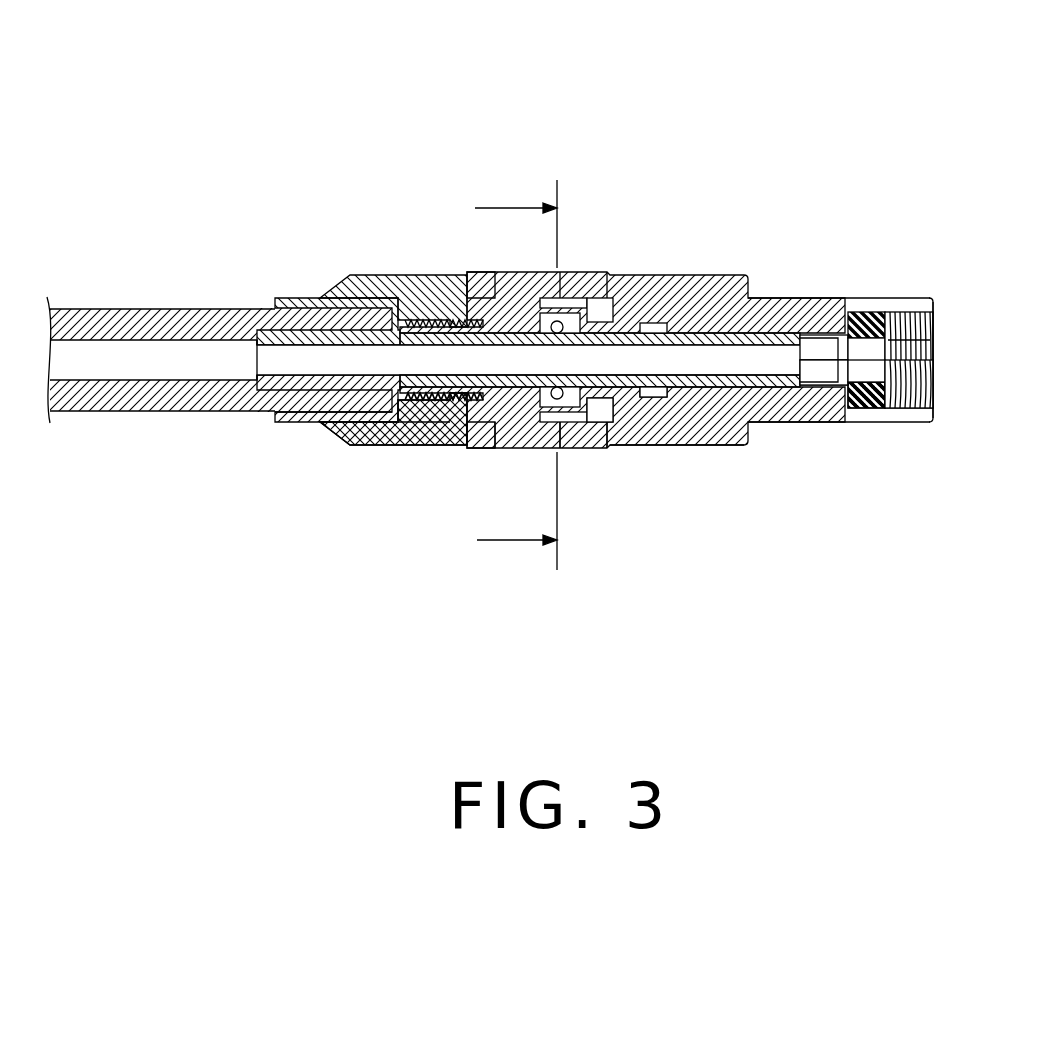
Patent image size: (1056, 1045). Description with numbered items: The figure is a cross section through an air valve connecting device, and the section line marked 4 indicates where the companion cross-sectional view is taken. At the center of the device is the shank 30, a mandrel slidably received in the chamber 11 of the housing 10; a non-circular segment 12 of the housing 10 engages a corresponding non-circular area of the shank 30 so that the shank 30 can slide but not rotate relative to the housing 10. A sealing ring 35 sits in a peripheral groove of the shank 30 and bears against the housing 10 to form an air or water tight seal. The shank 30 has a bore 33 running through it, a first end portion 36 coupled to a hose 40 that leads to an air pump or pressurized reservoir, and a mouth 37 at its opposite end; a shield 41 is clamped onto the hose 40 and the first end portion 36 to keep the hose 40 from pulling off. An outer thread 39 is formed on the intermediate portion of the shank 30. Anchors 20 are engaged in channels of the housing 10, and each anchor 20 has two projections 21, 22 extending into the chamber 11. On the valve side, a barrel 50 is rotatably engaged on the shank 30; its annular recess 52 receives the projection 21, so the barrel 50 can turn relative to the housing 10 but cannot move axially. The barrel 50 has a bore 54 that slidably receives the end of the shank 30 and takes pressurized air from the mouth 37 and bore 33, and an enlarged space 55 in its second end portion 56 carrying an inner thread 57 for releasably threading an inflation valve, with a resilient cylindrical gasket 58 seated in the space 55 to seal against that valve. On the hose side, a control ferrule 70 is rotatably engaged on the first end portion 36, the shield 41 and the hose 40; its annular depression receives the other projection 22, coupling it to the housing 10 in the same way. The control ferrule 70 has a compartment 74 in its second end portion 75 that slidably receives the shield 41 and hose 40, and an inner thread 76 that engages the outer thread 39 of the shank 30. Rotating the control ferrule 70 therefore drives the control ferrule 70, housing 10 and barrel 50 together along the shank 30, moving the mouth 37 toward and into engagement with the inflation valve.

The section line 4- 4 is at (505, 366).
The housing 10 is at (635, 443).
The chamber 11 is at (652, 412).
The non-circular segment 12 is at (573, 303).
The anchor 20 is at (572, 398).
The projection 21 is at (597, 420).
The projection 22 is at (508, 447).
The shank 30 is at (740, 277).
The bore 33 is at (723, 358).
The sealing ring 35 is at (533, 453).
The first end portion 36 is at (263, 420).
The mouth 37 is at (827, 305).
The outer thread 39 is at (440, 438).
The hose 40 is at (97, 327).
The shield 41 is at (280, 302).
The barrel 50 is at (795, 305).
The annular recess 52 is at (633, 305).
The bore 54 is at (775, 365).
The space 55 is at (883, 305).
The second end portion 56 is at (915, 420).
The inner thread 57 is at (910, 367).
The cylindrical gasket 58 is at (860, 413).
The control ferrule 70 is at (333, 285).
The compartment 74 is at (417, 302).
The second end portion 75 is at (330, 438).
The inner thread 76 is at (417, 398).